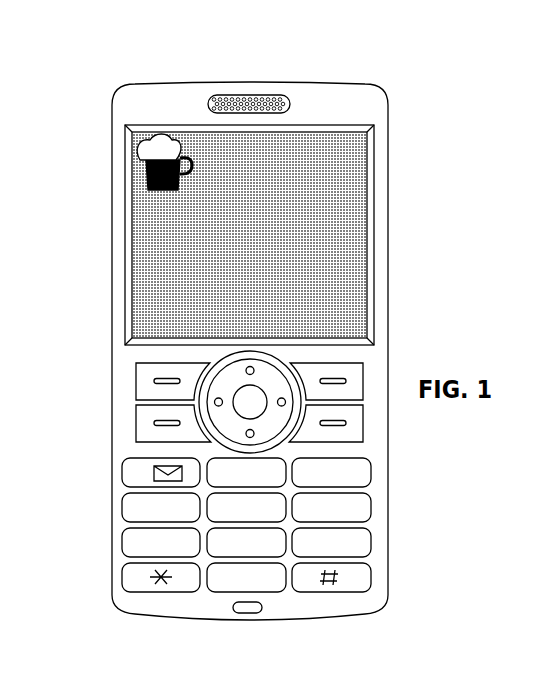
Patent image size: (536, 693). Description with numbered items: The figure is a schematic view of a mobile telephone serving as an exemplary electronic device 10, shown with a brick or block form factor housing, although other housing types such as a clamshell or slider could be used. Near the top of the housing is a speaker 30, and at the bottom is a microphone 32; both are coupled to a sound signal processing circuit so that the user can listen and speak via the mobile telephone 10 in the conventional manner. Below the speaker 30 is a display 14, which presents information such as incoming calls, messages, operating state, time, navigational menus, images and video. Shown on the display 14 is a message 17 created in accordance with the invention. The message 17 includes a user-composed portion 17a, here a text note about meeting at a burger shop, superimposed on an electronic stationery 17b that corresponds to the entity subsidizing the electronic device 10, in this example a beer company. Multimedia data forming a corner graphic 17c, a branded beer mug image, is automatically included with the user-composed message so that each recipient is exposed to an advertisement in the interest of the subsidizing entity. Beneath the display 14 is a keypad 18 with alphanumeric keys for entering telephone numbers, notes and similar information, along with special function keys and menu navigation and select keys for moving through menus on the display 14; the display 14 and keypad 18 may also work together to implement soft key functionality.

The electronic device 10 is at (120, 75).
The display 14 is at (132, 223).
The message 17 is at (404, 126).
The user-composed portion 17a is at (305, 222).
The electronic stationery 17b is at (150, 287).
The corner graphic 17c is at (130, 147).
The keypad 18 is at (179, 602).
The speaker 30 is at (250, 96).
The microphone 32 is at (253, 611).